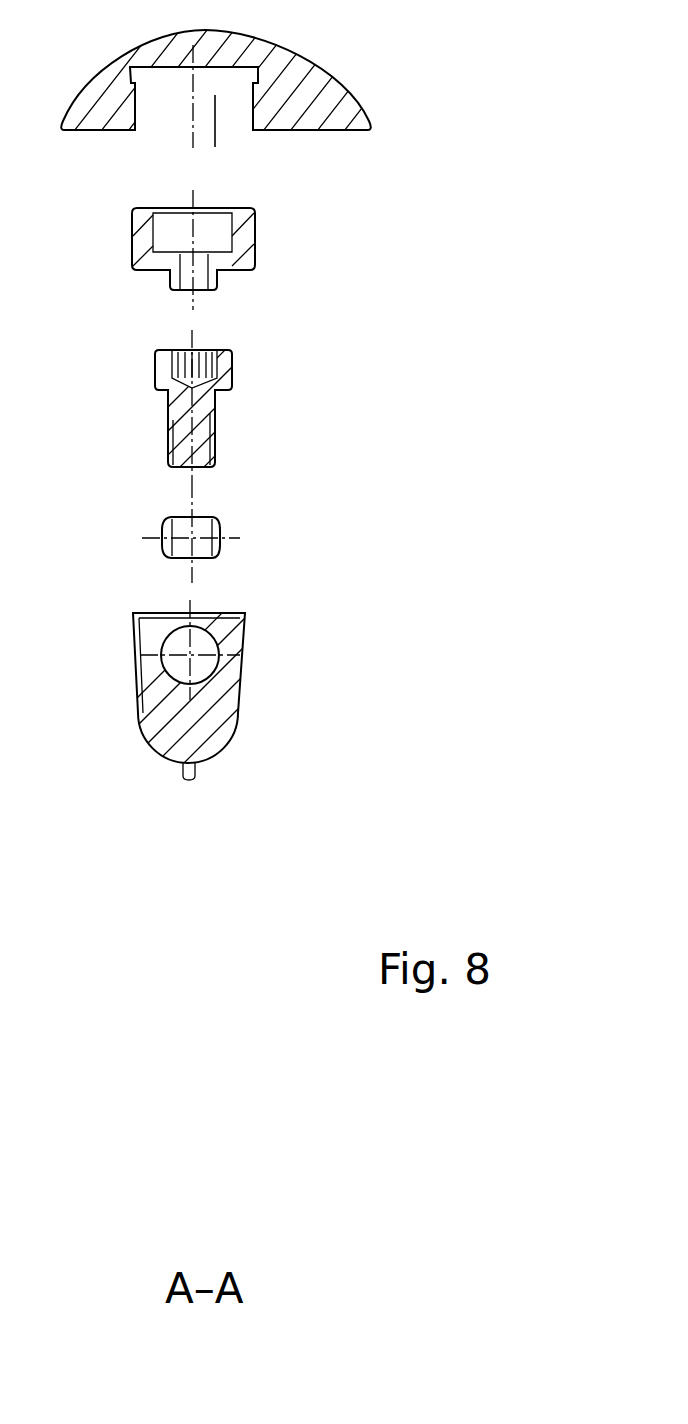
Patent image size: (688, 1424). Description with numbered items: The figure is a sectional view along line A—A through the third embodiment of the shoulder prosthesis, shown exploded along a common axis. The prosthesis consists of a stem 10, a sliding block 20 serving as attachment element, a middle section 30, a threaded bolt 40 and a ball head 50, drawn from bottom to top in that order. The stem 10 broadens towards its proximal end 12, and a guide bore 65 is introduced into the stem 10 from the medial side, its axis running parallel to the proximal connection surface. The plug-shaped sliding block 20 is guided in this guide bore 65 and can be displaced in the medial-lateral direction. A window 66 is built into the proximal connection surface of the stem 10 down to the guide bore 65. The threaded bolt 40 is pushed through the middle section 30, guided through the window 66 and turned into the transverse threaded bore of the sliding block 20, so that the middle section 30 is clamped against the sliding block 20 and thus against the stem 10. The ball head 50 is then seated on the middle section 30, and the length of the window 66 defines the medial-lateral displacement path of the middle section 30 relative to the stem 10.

The ball head 50 is at (300, 63).
The middle section 30 is at (243, 235).
The threaded bolt 40 is at (220, 382).
The sliding block 20 is at (218, 525).
The window 66 is at (223, 610).
The guide bore 65 is at (199, 670).
The stem 10 is at (243, 674).
The proximal end 12 is at (212, 720).